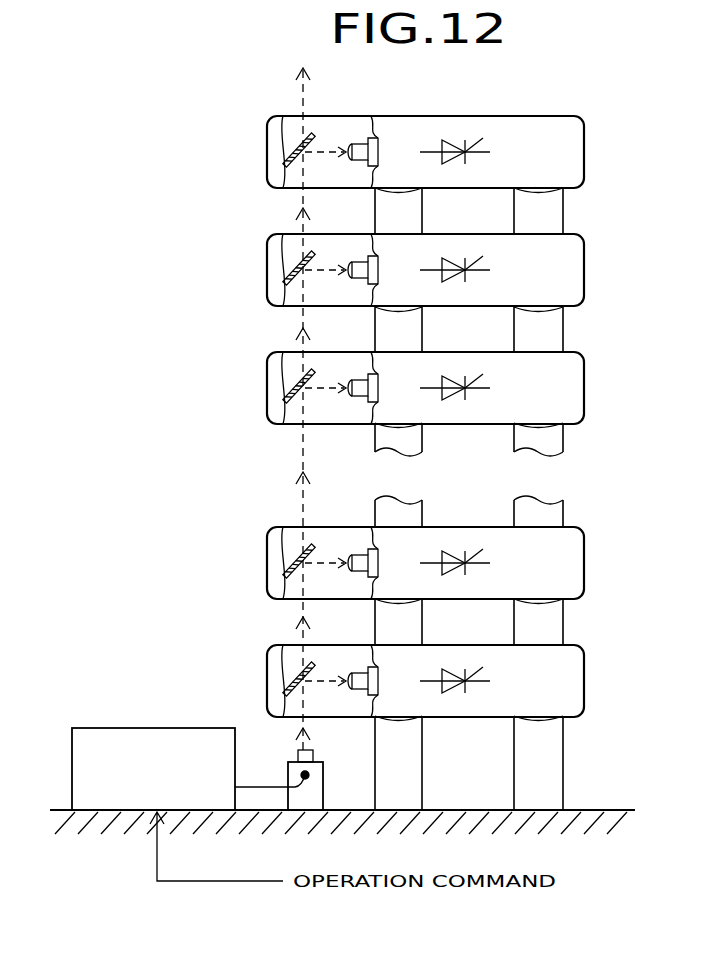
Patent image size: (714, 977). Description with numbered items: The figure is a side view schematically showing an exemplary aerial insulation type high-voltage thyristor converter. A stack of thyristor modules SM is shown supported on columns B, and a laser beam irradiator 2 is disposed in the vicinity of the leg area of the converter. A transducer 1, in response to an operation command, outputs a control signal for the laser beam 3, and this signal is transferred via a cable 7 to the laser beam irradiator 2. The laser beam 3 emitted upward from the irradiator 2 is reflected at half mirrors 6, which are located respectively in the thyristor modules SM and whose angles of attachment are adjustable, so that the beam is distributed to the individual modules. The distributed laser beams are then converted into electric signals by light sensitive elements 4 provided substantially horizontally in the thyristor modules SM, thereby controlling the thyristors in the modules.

The transducer 1 is at (137, 739).
The laser beam irradiator 2 is at (322, 779).
The laser beam 3 is at (298, 639).
The light sensitive element 4 is at (358, 552).
The half mirror 6 is at (313, 548).
The cable 7 is at (267, 786).
The thyristor module SM is at (585, 152).
The insulating support column B is at (564, 210).